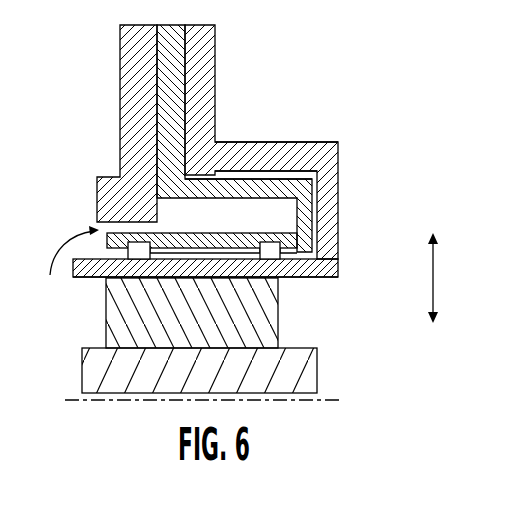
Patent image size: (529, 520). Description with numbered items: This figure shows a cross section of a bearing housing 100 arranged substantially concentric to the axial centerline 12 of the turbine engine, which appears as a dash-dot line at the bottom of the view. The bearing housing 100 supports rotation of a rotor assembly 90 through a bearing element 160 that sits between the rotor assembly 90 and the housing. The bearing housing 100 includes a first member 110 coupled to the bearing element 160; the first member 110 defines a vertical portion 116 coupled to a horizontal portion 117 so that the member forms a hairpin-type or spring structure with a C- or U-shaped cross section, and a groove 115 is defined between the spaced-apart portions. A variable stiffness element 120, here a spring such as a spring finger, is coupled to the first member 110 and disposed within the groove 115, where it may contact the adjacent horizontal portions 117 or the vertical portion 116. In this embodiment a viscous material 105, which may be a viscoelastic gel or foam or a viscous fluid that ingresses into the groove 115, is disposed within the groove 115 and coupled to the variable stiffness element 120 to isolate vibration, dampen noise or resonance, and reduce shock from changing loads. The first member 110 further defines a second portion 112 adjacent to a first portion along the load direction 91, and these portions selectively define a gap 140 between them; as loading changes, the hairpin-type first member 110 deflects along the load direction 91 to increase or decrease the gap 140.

The bearing housing 100 is at (242, 177).
The viscous material 105 is at (172, 193).
The first member 110 is at (340, 146).
The second portion 112 is at (110, 190).
The groove 115 is at (262, 174).
The vertical portion 116 is at (340, 250).
The horizontal portion 117 is at (323, 142).
The variable stiffness element 120 is at (202, 251).
The gap 140 is at (66, 265).
The bearing element 160 is at (106, 328).
The rotor assembly 90 is at (343, 367).
The load direction 91 is at (434, 277).
The axial centerline 12 is at (297, 401).